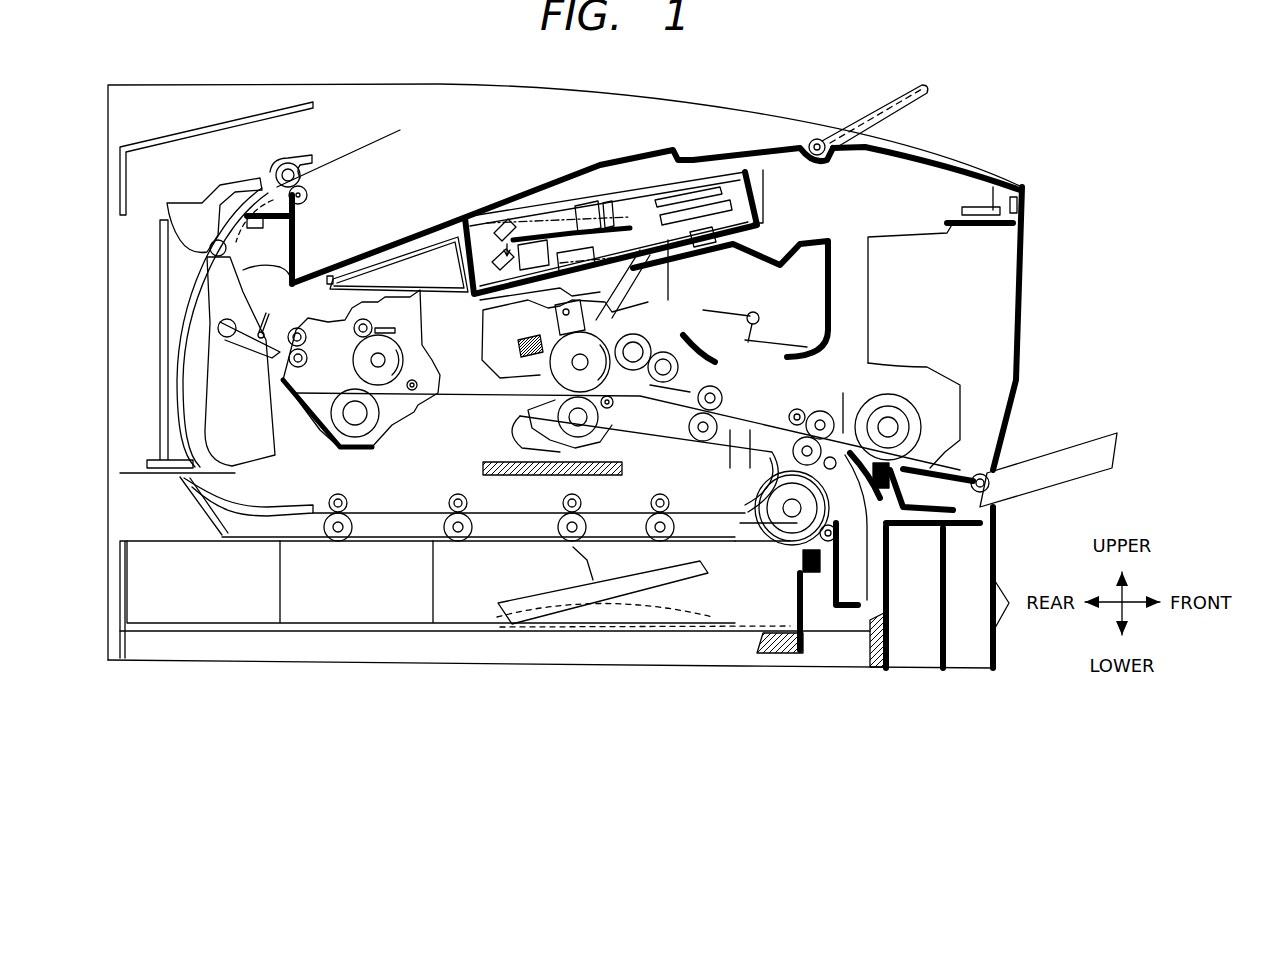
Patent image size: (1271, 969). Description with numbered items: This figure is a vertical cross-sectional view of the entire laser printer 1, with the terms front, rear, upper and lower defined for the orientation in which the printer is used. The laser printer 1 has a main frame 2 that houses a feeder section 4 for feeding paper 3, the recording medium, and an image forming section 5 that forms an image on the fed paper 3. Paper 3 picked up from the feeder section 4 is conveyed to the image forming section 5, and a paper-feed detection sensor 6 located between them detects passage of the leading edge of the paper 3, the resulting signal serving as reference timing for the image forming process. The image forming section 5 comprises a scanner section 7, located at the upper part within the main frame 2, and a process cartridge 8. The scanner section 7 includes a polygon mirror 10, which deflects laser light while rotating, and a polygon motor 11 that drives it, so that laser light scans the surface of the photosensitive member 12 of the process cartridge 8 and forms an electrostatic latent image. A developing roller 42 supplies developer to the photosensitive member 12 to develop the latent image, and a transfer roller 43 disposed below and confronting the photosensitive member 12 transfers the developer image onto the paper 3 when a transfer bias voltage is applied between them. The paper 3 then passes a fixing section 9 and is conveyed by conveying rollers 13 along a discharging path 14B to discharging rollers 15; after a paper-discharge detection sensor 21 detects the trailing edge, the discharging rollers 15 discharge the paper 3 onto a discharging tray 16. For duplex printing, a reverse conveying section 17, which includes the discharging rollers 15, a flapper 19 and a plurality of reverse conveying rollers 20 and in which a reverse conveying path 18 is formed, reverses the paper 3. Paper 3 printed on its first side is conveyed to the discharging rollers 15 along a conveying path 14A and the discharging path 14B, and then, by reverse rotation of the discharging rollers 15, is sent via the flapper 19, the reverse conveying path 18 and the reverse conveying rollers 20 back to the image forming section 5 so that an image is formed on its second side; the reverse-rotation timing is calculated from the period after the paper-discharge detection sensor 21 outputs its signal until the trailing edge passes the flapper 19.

The laser printer 1 is at (573, 708).
The main frame 2 is at (105, 382).
The paper 3 is at (367, 146).
The feeder section 4 is at (170, 530).
The image forming section 5 is at (498, 408).
The paper-feed detection sensor 6 is at (695, 388).
The scanner section 7 is at (566, 194).
The process cartridge 8 is at (785, 236).
The fixing section 9 is at (410, 397).
The polygon mirror 10 is at (718, 185).
The polygon motor 11 is at (703, 248).
The photosensitive member 12 is at (570, 372).
The conveying rollers 13 is at (310, 357).
The conveying path 14A is at (478, 400).
The discharging path 14B is at (298, 268).
The discharging rollers 15 is at (272, 178).
The discharging tray 16 is at (418, 235).
The reverse conveying section 17 is at (262, 492).
The reverse conveying path 18 is at (176, 325).
The flapper 19 is at (210, 240).
The reverse conveying rollers 20 is at (456, 485).
The paper-discharge detection sensor 21 is at (268, 322).
The developing roller 42 is at (645, 330).
The transfer roller 43 is at (597, 448).